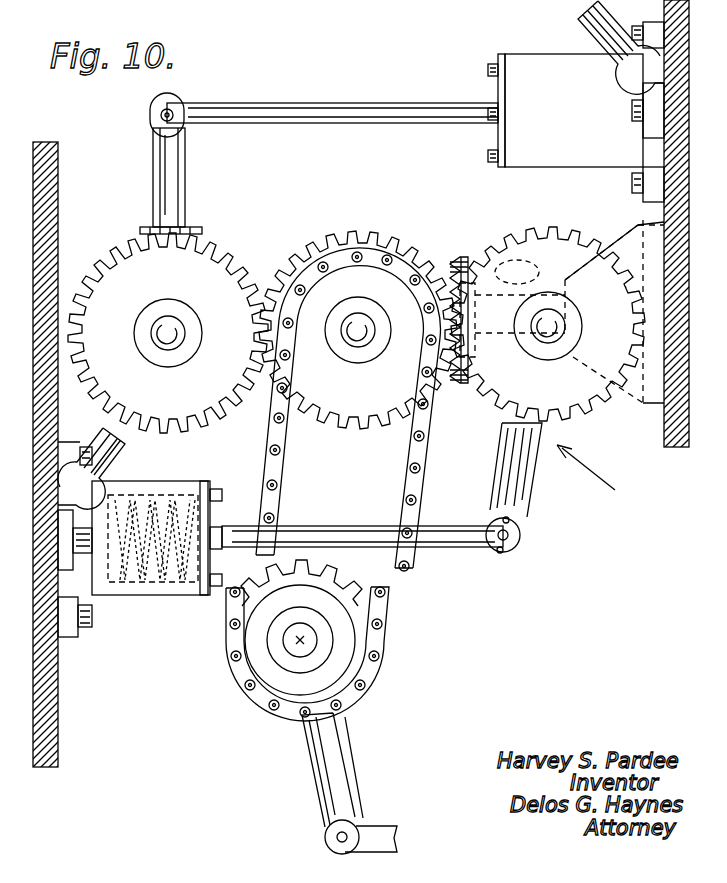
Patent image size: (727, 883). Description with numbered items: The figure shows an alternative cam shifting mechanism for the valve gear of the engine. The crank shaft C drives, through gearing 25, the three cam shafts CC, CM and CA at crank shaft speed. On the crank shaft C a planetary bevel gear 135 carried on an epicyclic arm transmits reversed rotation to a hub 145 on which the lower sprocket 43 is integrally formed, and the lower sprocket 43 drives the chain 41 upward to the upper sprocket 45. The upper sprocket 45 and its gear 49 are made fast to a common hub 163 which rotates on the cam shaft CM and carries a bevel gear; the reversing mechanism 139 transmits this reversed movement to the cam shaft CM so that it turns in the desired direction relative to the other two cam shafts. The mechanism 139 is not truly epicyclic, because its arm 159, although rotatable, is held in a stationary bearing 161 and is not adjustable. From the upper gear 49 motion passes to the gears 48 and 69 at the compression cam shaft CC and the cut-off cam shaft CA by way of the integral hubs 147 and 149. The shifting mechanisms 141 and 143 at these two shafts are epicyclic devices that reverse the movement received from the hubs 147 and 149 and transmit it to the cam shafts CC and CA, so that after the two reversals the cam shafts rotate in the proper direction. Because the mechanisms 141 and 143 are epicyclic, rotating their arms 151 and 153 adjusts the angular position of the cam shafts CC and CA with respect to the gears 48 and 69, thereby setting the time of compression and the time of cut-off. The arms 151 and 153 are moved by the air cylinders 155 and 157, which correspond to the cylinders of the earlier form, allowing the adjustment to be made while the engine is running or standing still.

The epicyclic arm 151 is at (152, 152).
The air cylinder 155 is at (548, 65).
The shifting mechanism 141 is at (258, 216).
The gear 48 is at (218, 277).
The hub 147 is at (172, 360).
The compression cam shaft CC is at (185, 331).
The upper sprocket 45 is at (338, 285).
The cam shaft CM is at (362, 345).
The hub 163 is at (356, 310).
The chain 41 is at (344, 460).
The upper gear 49 is at (376, 256).
The reversing mechanism 139 is at (465, 258).
The stationary bearing 161 is at (627, 230).
The shifting mechanism 143 is at (600, 427).
The gear 69 is at (549, 236).
The arm 159 is at (517, 272).
The hub 149 is at (536, 353).
The cut-off cam shaft CA is at (552, 324).
The epicyclic arm 153 is at (520, 481).
The gearing 25 is at (601, 475).
The lower sprocket 43 is at (358, 610).
The hub 145 is at (280, 655).
The crank shaft C is at (314, 650).
The planetary bevel gear 135 is at (376, 700).
The air cylinder 157 is at (120, 595).